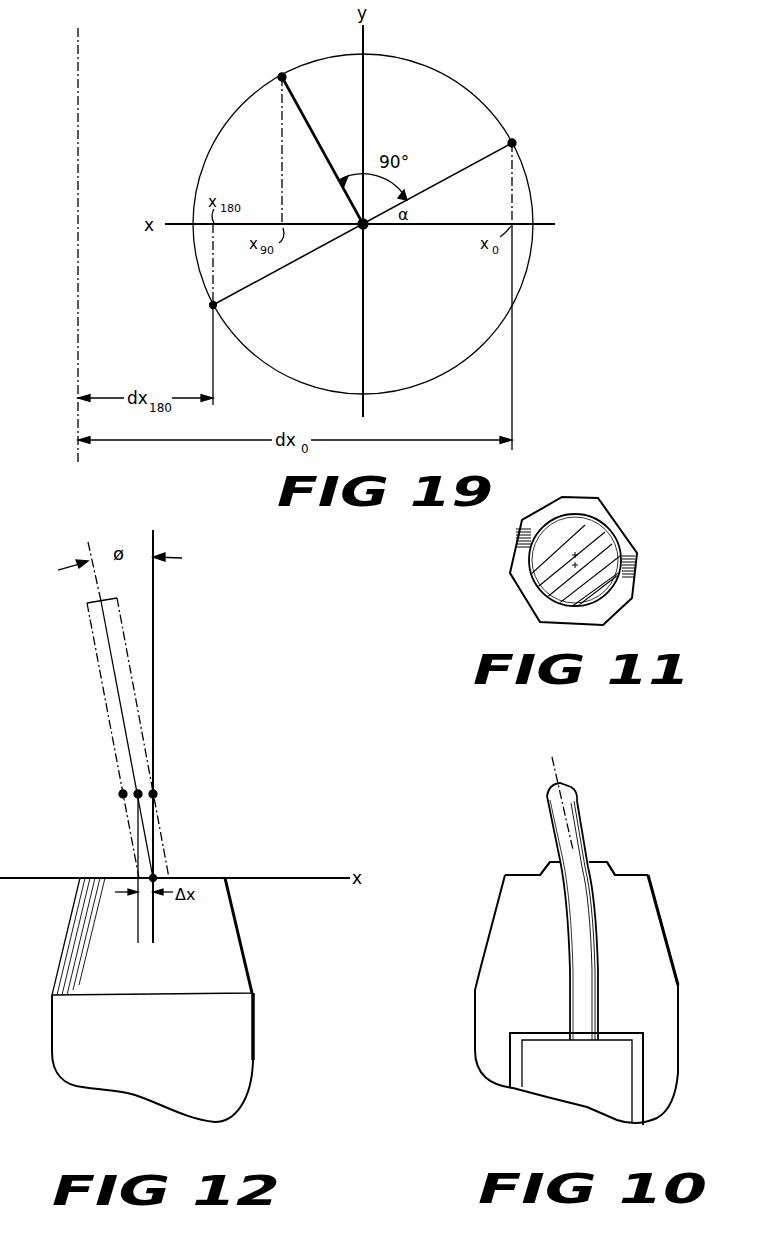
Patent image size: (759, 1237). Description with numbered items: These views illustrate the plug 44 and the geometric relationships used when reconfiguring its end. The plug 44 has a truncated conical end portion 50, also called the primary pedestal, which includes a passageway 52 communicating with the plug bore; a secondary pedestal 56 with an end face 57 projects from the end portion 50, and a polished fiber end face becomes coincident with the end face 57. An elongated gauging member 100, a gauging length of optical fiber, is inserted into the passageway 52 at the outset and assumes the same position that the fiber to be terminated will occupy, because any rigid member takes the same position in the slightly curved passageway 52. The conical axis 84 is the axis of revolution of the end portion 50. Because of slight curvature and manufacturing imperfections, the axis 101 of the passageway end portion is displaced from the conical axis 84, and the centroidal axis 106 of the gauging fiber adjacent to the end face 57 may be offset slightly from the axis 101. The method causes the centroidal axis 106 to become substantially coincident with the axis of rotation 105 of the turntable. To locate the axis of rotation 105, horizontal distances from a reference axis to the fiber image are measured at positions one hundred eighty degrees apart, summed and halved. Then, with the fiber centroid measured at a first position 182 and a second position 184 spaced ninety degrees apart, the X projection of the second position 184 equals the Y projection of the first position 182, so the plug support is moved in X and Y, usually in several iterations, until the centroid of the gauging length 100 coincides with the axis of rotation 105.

In FIG. 19, the axis of rotation 105 is at (366, 228).
In FIG. 19, the second position 184 is at (282, 76).
In FIG. 19, the first position 182 is at (513, 142).
In FIG. 11, the centroidal axis 106 is at (550, 600).
In FIG. 10, the centroidal axis 106 is at (557, 776).
In FIG. 11, the optical fiber axis 101 is at (578, 553).
In FIG. 12, the conical axis 84 is at (153, 614).
In FIG. 12, the gauging member 100 is at (92, 627).
In FIG. 10, the gauging member 100 is at (590, 931).
In FIG. 12, the end portion 50 is at (230, 961).
In FIG. 12, the plug 44 is at (240, 1040).
In FIG. 10, the end face 57 is at (548, 861).
In FIG. 10, the secondary pedestal 56 is at (614, 871).
In FIG. 10, the passageway 52 is at (593, 993).